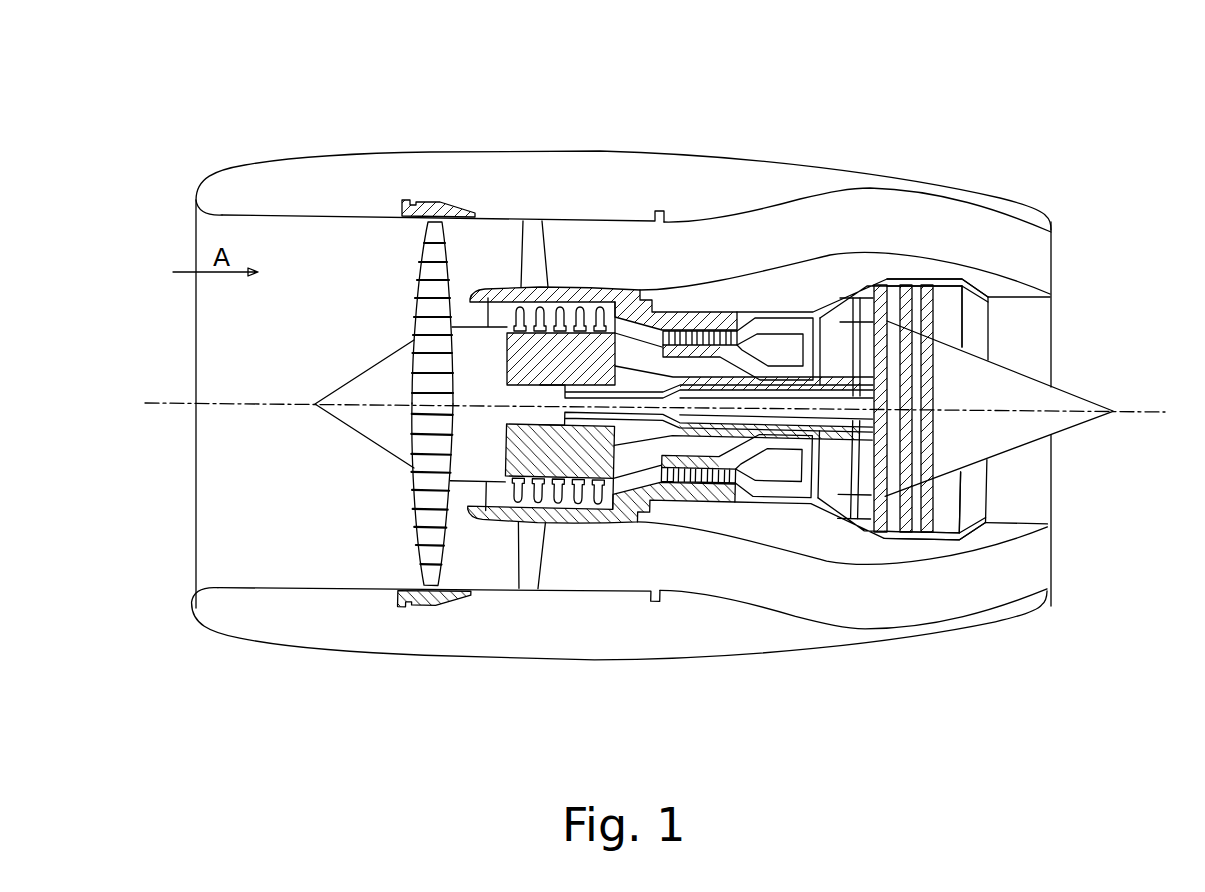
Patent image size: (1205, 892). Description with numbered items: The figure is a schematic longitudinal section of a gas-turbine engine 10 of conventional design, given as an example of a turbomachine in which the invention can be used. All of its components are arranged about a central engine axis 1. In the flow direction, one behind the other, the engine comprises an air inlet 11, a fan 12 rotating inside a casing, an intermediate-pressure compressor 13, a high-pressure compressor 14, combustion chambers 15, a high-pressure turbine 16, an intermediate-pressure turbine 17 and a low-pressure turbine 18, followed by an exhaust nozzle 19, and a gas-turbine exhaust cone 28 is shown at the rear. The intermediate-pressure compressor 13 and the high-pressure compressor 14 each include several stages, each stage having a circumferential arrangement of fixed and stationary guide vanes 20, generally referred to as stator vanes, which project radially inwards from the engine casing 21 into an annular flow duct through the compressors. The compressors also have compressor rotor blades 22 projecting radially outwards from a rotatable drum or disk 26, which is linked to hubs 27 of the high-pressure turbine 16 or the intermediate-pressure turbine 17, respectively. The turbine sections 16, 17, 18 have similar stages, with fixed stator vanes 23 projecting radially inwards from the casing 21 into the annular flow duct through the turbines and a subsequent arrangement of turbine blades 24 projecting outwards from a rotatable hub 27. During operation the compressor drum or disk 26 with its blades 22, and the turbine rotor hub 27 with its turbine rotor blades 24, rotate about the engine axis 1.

The central engine axis 1 is at (270, 407).
The gas-turbine engine 10 is at (812, 226).
The air inlet 11 is at (373, 268).
The fan 12 is at (424, 206).
The intermediate-pressure compressor 13 is at (553, 305).
The high-pressure compressor 14 is at (715, 312).
The combustion chambers 15 is at (777, 340).
The high-pressure turbine 16 is at (818, 326).
The intermediate-pressure turbine 17 is at (855, 312).
The low-pressure turbine 18 is at (937, 280).
The exhaust nozzle 19 is at (973, 328).
The guide vanes 20 is at (522, 500).
The engine casing 21 is at (560, 527).
The compressor rotor blades 22 is at (587, 500).
The stator vanes 23 is at (865, 520).
The turbine blades 24 is at (902, 527).
The compressor drum or disk 26 is at (610, 458).
The turbine rotor hub 27 is at (860, 470).
The gas-turbine exhaust cone 28 is at (1083, 405).